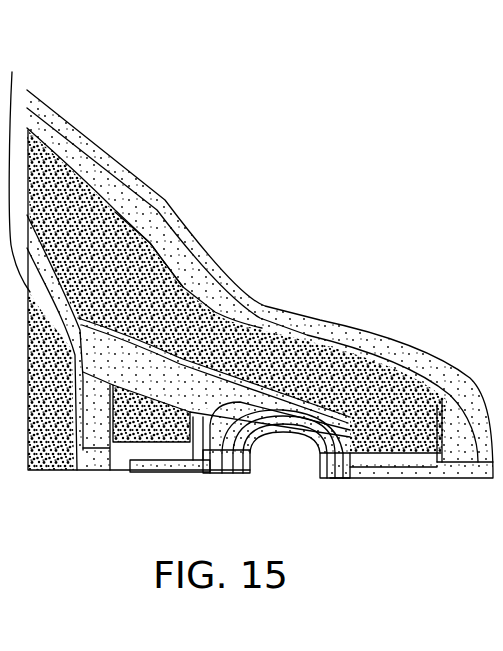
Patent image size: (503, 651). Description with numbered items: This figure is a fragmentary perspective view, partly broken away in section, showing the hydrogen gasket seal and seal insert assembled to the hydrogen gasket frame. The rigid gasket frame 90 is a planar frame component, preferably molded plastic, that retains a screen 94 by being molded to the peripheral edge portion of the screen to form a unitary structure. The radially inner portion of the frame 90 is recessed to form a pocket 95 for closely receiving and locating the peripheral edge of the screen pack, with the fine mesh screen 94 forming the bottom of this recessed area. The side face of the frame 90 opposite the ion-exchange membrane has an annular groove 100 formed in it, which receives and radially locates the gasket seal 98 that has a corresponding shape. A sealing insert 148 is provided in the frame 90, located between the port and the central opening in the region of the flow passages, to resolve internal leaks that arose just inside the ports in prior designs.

The rigid gasket frame 90 is at (152, 181).
The screen 94 is at (53, 457).
The pocket 95 is at (17, 167).
The gasket seal 98 is at (283, 337).
The annular groove 100 is at (160, 273).
The sealing insert 148 is at (158, 440).